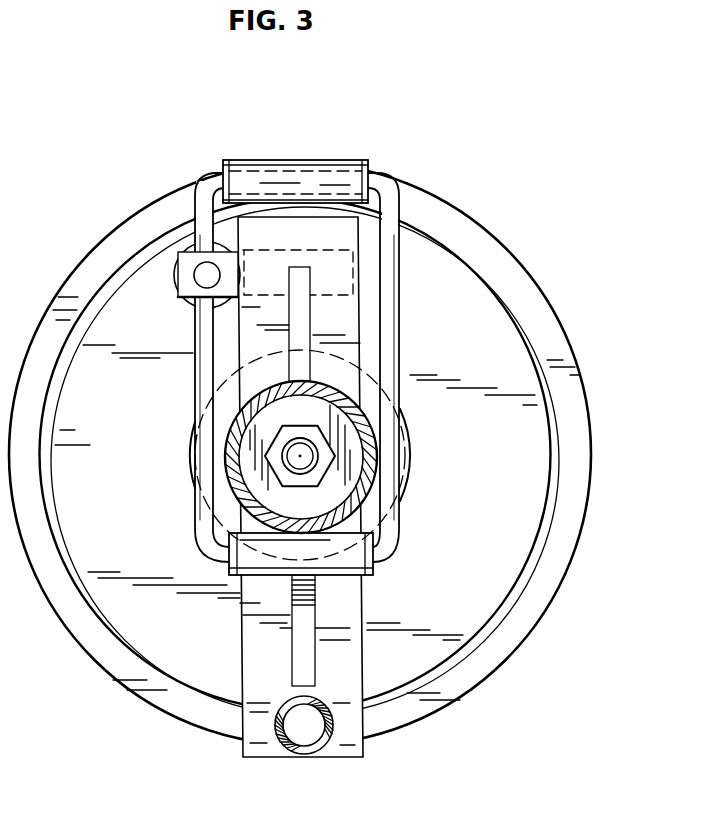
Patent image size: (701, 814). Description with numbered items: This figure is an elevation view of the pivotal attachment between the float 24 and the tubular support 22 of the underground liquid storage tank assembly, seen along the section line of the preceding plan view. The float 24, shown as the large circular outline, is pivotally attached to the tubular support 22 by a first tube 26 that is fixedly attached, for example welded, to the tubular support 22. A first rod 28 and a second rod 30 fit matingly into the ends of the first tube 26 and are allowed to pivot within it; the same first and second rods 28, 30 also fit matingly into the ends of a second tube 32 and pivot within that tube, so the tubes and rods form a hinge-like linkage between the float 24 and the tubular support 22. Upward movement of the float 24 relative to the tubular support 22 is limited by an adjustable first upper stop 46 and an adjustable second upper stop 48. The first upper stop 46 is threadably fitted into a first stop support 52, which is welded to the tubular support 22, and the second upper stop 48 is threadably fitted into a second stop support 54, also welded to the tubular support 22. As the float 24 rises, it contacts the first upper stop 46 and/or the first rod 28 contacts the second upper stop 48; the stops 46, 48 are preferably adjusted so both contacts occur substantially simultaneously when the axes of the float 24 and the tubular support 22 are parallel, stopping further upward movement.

The tubular support 22 is at (277, 381).
The float 24 is at (577, 557).
The first tube 26 is at (368, 573).
The first rod 28 is at (200, 531).
The second rod 30 is at (407, 527).
The second tube 32 is at (293, 160).
The first upper stop 46 is at (330, 736).
The second upper stop 48 is at (207, 275).
The first stop support 52 is at (363, 663).
The second stop support 54 is at (358, 308).